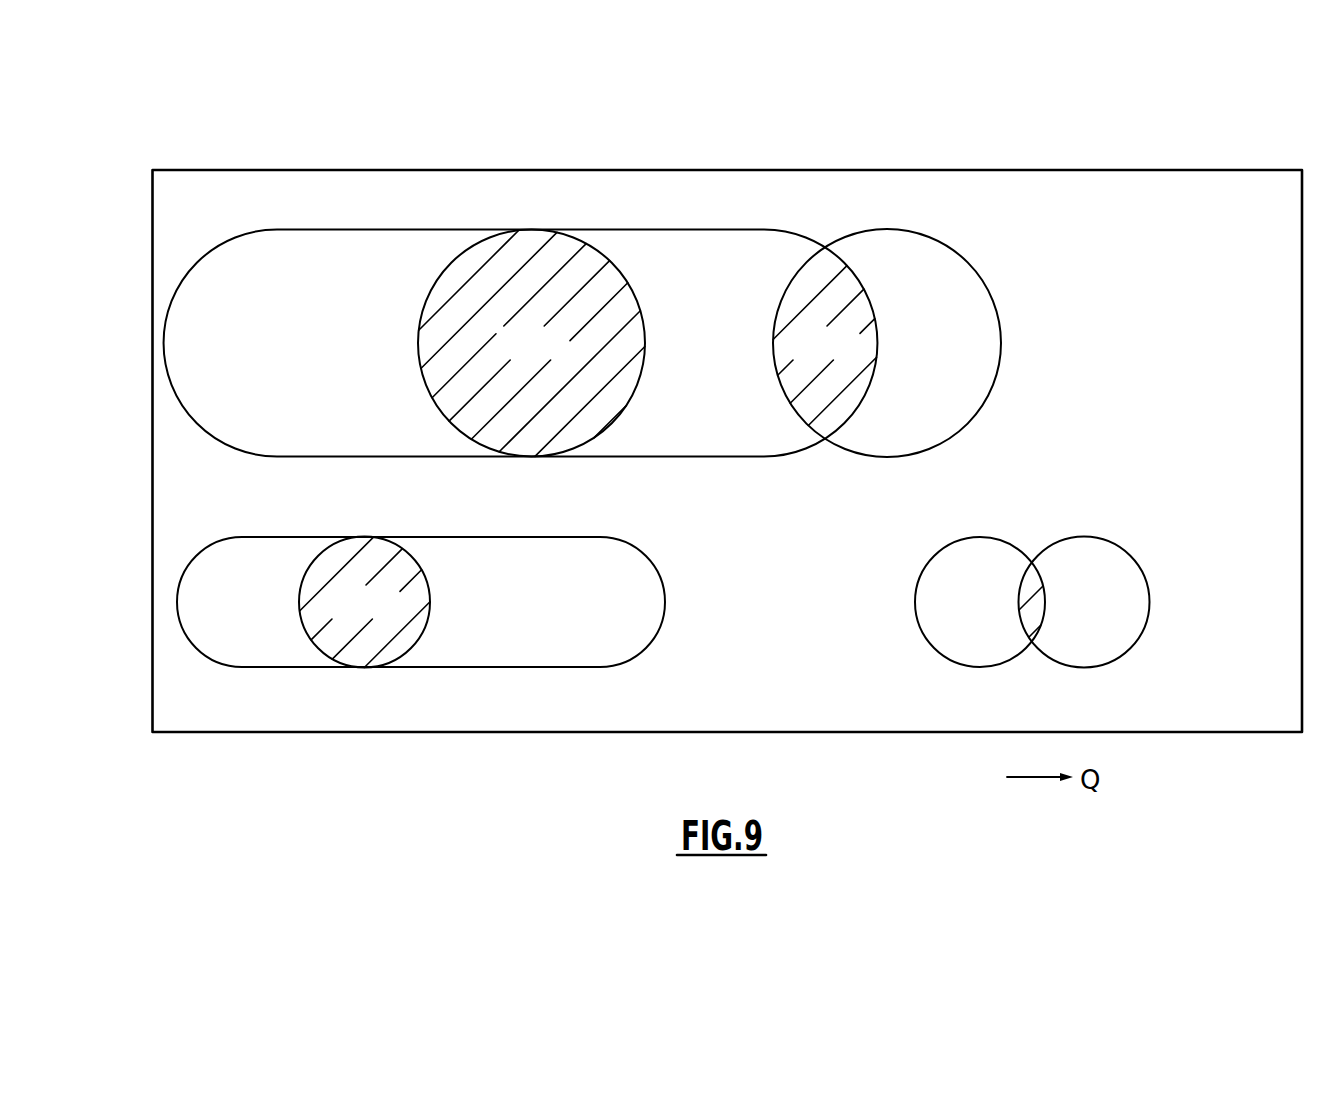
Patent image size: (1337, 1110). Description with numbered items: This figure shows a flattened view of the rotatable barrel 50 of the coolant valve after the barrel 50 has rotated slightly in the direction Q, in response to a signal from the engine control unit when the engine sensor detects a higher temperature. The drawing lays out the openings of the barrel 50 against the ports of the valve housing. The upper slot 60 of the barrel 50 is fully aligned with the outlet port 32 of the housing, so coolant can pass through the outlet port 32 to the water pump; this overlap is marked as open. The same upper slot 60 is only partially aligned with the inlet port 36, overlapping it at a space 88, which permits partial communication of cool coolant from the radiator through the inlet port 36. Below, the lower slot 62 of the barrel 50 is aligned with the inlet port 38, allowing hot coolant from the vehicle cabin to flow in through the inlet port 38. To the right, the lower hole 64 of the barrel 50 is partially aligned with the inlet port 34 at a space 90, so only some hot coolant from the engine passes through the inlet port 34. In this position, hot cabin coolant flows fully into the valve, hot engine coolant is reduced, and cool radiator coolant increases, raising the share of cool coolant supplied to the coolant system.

The barrel 50 is at (1040, 121).
The upper slot 60 is at (415, 229).
The outlet port 32 is at (593, 226).
The inlet port 36 is at (846, 220).
The space 88 is at (813, 277).
The lower slot 62 is at (275, 537).
The inlet port 38 is at (400, 525).
The inlet port 34 is at (944, 528).
The lower hole 64 is at (1137, 613).
The space 90 is at (1032, 577).